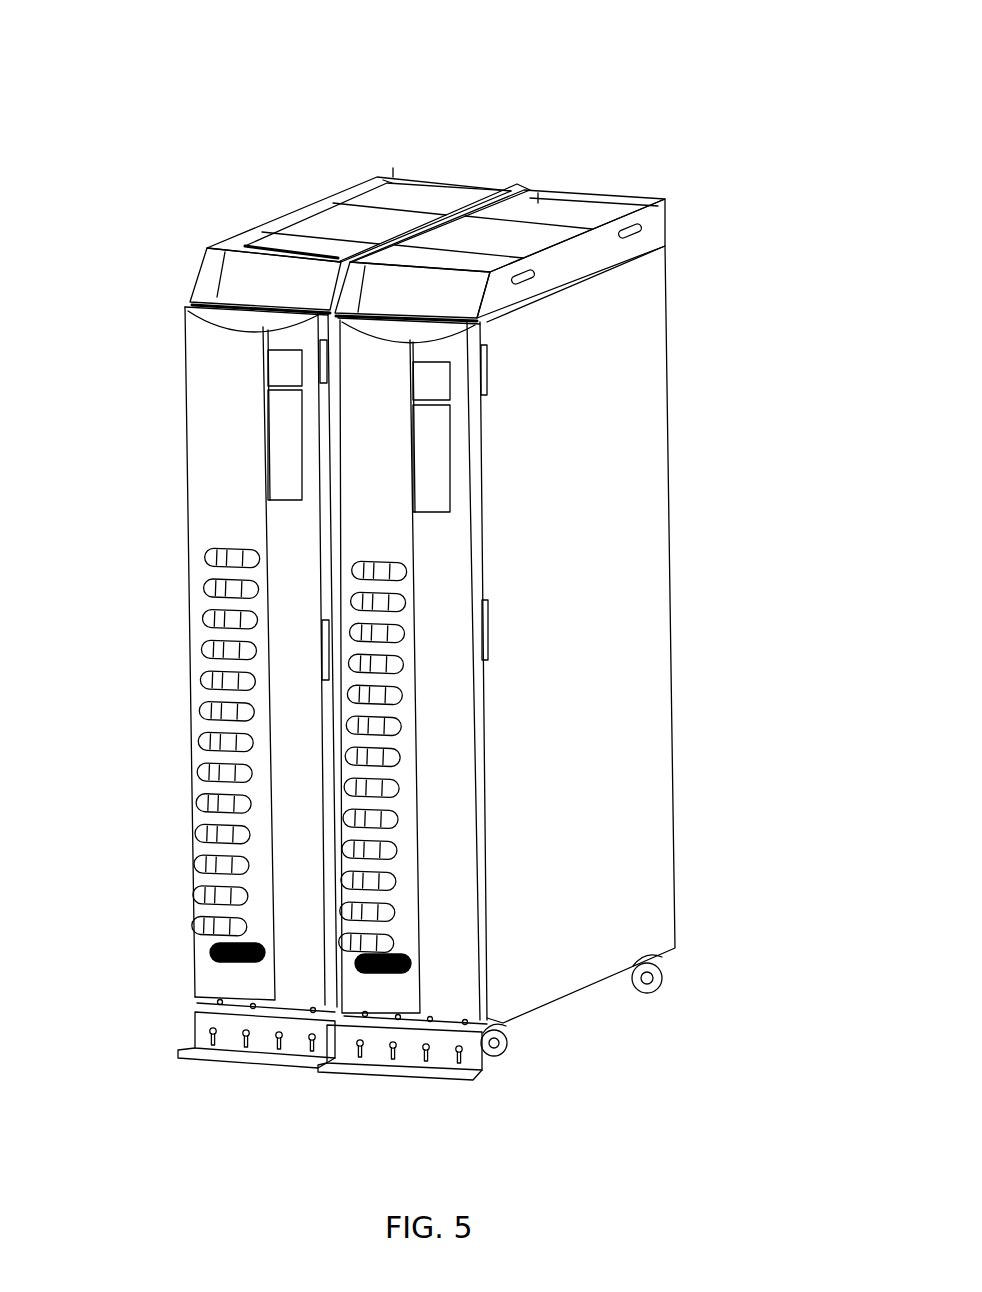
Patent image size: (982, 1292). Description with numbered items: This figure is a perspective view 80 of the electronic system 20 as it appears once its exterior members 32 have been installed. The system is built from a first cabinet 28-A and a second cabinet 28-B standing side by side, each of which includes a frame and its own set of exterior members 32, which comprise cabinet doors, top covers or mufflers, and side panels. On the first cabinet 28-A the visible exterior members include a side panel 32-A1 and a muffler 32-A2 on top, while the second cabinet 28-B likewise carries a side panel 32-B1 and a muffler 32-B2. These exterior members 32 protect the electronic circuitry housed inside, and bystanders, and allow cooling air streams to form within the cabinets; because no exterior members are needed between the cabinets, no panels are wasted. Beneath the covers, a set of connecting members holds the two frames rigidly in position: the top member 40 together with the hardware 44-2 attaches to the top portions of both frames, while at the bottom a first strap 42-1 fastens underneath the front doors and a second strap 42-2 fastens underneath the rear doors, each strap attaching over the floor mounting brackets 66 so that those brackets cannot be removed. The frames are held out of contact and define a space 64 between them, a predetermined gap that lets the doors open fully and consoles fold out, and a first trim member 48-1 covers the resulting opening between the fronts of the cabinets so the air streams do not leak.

The electronic system 20 is at (717, 81).
The first cabinet 28-A is at (168, 163).
The second cabinet 28-B is at (749, 277).
The exterior members 32 is at (638, 139).
The side panel 32-A1 is at (147, 369).
The muffler 32-A2 is at (384, 173).
The side panel 32-B1 is at (643, 376).
The muffler 32-B2 is at (540, 185).
The top member 40 is at (316, 287).
The first strap 42-1 is at (326, 999).
The second strap 42-2 is at (684, 847).
The hardware 44-2 is at (683, 511).
The first trim member 48-1 is at (310, 527).
The space 64 is at (679, 241).
The mounting brackets 66 is at (282, 1009).
The perspective view 80 is at (501, 88).